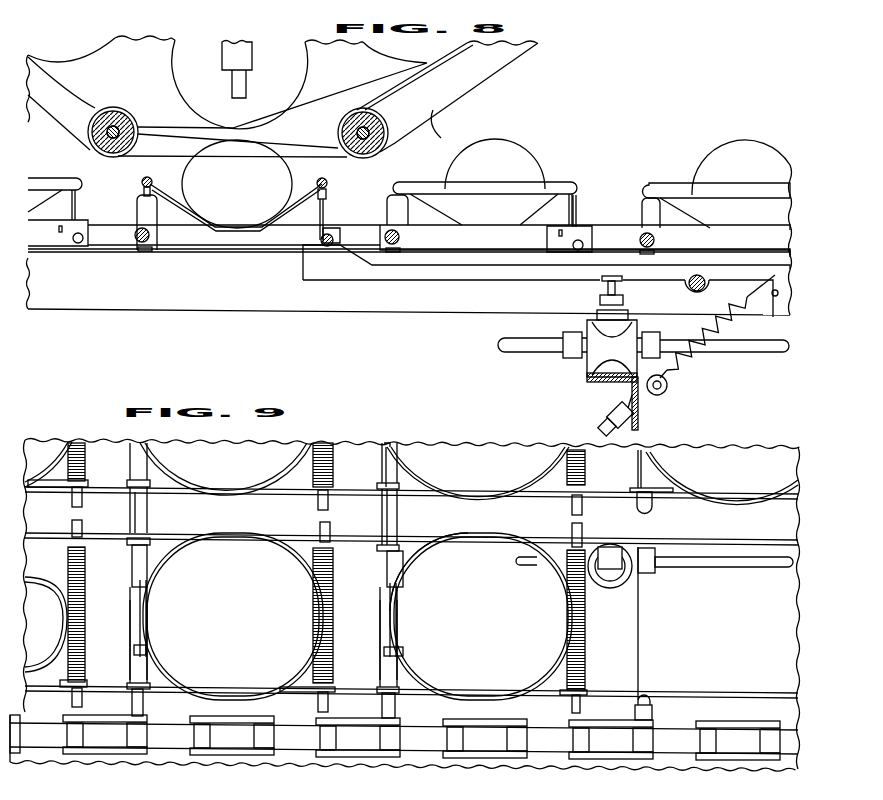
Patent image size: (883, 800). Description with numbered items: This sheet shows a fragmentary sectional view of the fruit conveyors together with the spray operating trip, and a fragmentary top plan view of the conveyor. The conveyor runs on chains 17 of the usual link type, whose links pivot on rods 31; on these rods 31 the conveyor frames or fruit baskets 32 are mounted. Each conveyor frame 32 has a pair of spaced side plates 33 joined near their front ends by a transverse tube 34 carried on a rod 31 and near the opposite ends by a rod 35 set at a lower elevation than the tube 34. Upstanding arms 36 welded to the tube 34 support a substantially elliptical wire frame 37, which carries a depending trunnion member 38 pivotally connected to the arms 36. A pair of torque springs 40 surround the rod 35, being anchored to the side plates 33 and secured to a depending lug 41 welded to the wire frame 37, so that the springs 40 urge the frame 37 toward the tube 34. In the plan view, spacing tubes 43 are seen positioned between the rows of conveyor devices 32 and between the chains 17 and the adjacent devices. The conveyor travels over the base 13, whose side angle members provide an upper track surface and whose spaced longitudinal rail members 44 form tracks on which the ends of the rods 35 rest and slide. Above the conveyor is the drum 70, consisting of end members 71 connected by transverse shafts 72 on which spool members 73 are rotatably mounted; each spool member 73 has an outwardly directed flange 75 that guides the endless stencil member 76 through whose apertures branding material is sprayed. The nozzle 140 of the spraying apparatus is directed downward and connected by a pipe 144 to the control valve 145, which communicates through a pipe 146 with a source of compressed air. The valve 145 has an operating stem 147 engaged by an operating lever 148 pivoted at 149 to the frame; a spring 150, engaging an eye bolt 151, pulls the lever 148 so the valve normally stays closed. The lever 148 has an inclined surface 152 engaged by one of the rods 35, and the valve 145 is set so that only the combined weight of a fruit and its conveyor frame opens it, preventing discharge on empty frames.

In FIG. 9, the base 13 is at (362, 760).
In FIG. 8, the chains 17 is at (100, 223).
In FIG. 9, the chains 17 is at (170, 750).
In FIG. 8, the rods 31 is at (134, 234).
In FIG. 9, the rods 31 is at (643, 695).
In FIG. 8, the conveyor frames 32 is at (45, 176).
In FIG. 9, the conveyor frames 32 is at (183, 447).
In FIG. 8, the side plates 33 is at (268, 243).
In FIG. 9, the side plates 33 is at (167, 488).
In FIG. 8, the transverse tube 34 is at (142, 250).
In FIG. 9, the transverse tube 34 is at (130, 623).
In FIG. 8, the rod 35 is at (78, 245).
In FIG. 9, the rod 35 is at (330, 520).
In FIG. 8, the upstanding arms 36 is at (137, 213).
In FIG. 9, the upstanding arms 36 is at (137, 563).
In FIG. 8, the wire frame 37 is at (330, 183).
In FIG. 9, the wire frame 37 is at (420, 562).
In FIG. 8, the trunnion member 38 is at (143, 190).
In FIG. 8, the torque springs 40 is at (75, 195).
In FIG. 9, the torque springs 40 is at (333, 453).
In FIG. 8, the depending lug 41 is at (328, 194).
In FIG. 9, the spacing tubes 43 is at (135, 514).
In FIG. 9, the longitudinal rail members 44 is at (620, 502).
In FIG. 8, the drum 70 is at (502, 88).
In FIG. 8, the end members 71 is at (472, 100).
In FIG. 8, the transverse shafts 72 is at (138, 130).
In FIG. 8, the spool members 73 is at (120, 117).
In FIG. 8, the outwardly directed flange 75 is at (100, 110).
In FIG. 8, the stencil member 76 is at (433, 127).
In FIG. 8, the nozzle 140 is at (250, 67).
In FIG. 8, the pipe 144 is at (530, 328).
In FIG. 9, the pipe 144 is at (532, 567).
In FIG. 8, the control valve 145 is at (598, 357).
In FIG. 9, the control valve 145 is at (625, 575).
In FIG. 8, the pipe 146 is at (747, 350).
In FIG. 9, the pipe 146 is at (740, 567).
In FIG. 8, the operating stem 147 is at (600, 290).
In FIG. 8, the operating lever 148 is at (473, 279).
In FIG. 9, the operating lever 148 is at (665, 548).
In FIG. 8, the pivot 149 is at (688, 288).
In FIG. 8, the spring 150 is at (738, 325).
In FIG. 8, the eye bolt 151 is at (665, 390).
In FIG. 8, the inclined surface 152 is at (352, 254).